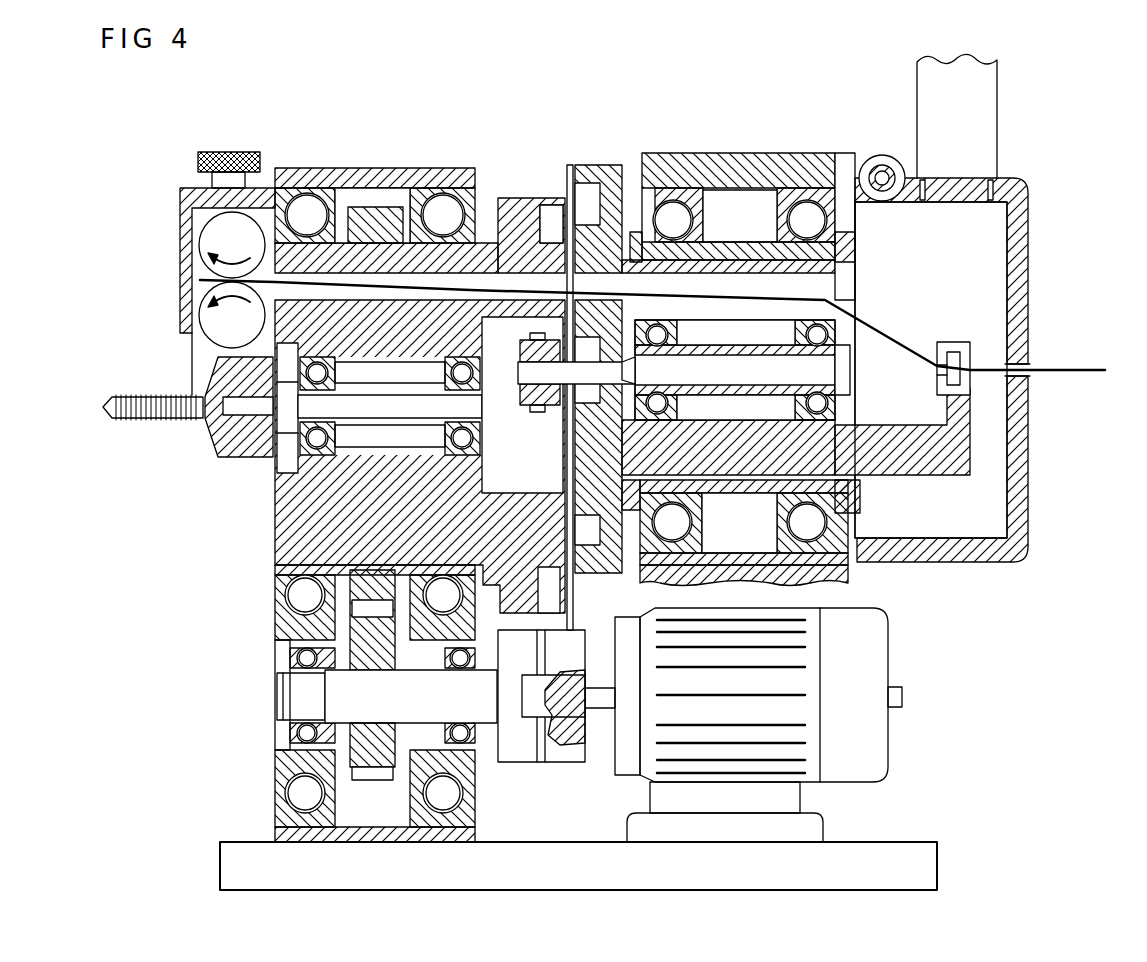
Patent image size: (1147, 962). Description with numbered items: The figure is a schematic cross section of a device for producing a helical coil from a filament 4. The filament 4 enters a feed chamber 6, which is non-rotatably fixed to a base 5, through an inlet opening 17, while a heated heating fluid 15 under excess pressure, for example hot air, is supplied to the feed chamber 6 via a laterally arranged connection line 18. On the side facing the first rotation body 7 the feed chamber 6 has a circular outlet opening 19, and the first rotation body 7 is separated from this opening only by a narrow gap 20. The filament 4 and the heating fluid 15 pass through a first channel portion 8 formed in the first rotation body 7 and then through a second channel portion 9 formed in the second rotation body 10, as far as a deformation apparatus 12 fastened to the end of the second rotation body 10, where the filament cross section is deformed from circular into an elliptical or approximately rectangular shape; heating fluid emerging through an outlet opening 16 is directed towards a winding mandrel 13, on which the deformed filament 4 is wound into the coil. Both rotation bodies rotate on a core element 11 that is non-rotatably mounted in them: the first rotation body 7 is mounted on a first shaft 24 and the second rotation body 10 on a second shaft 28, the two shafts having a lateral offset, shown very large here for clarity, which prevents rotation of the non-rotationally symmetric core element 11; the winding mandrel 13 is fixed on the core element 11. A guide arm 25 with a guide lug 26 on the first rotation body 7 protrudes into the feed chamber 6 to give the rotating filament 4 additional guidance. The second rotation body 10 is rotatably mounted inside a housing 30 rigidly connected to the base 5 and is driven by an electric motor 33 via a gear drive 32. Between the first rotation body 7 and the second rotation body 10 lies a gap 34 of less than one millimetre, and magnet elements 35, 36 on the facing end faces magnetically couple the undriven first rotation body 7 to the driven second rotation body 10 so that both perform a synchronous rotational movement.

The filament 4 is at (1112, 366).
The base 5 is at (908, 836).
The feed chamber 6 is at (1020, 278).
The first rotation body 7 is at (818, 455).
The first channel portion 8 is at (745, 278).
The second channel portion 9 is at (486, 266).
The second rotation body 10 is at (363, 408).
The core element 11 is at (500, 420).
The deformation apparatus 12 is at (180, 163).
The winding mandrel 13 is at (140, 412).
The heating fluid 15 is at (945, 262).
The outlet opening 16 is at (176, 350).
The inlet opening 17 is at (1042, 357).
The connection line 18 is at (992, 110).
The circular outlet opening 19 is at (873, 256).
The gap 20 is at (846, 281).
The first shaft 24 is at (698, 345).
The guide arm 25 is at (935, 457).
The guide lug 26 is at (987, 382).
The second shaft 28 is at (280, 470).
The housing 30 is at (360, 172).
The gear drive 32 is at (373, 660).
The electric motor 33 is at (800, 735).
The gap 34 is at (567, 158).
The magnet elements 35 is at (553, 215).
The magnet elements 36 is at (588, 195).